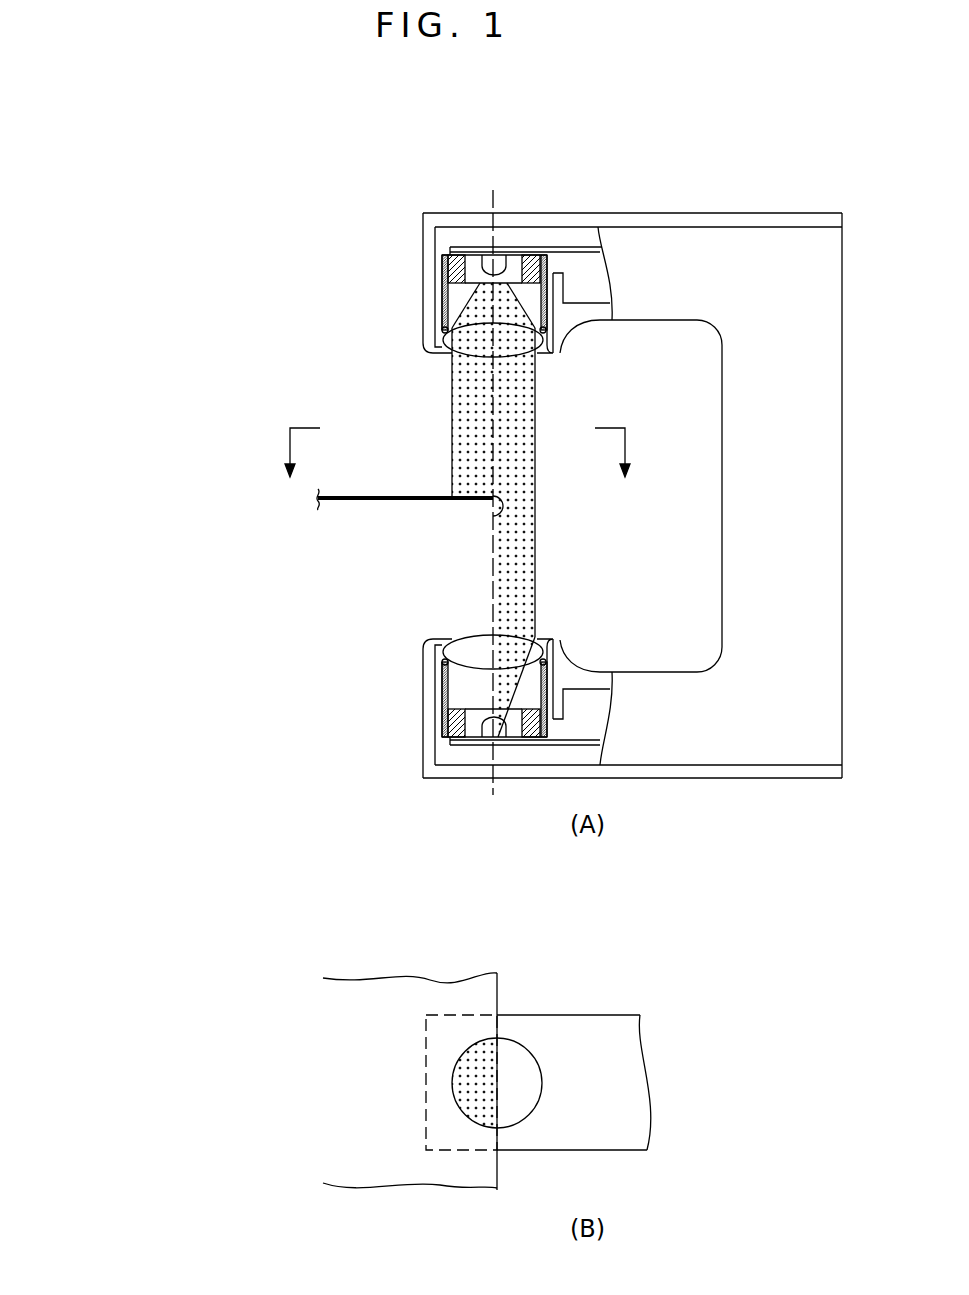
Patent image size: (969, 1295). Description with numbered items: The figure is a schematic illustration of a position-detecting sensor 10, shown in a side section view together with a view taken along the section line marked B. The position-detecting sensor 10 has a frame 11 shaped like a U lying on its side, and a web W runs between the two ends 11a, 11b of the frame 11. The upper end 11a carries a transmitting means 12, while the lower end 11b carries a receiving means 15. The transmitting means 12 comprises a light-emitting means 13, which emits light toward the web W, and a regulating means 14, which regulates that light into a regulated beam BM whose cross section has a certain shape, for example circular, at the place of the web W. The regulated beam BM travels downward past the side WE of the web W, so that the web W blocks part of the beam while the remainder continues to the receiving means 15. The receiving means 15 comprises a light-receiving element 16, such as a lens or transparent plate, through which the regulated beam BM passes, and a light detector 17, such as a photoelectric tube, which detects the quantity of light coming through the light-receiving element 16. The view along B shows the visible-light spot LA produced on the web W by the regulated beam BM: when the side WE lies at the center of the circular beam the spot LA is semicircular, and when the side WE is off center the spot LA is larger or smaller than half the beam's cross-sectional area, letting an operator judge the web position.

The position-detecting sensor 10 is at (437, 197).
The frame 11 is at (433, 240).
The end of the frame 11a is at (628, 206).
The end of the frame 11b is at (603, 667).
The transmitting means 12 is at (198, 388).
The light-emitting means 13 is at (462, 300).
The regulating means 14 is at (450, 342).
The receiving means 15 is at (359, 640).
The light-receiving element 16 is at (465, 655).
The light detector 17 is at (482, 727).
The regulated beam BM is at (537, 527).
The web W is at (388, 502).
The side of the web WE is at (494, 517).
The visible-light spot LA is at (470, 1072).
The section B is at (456, 452).